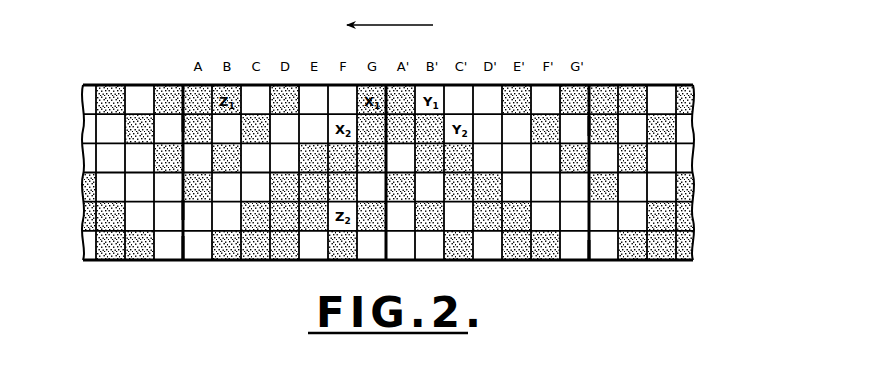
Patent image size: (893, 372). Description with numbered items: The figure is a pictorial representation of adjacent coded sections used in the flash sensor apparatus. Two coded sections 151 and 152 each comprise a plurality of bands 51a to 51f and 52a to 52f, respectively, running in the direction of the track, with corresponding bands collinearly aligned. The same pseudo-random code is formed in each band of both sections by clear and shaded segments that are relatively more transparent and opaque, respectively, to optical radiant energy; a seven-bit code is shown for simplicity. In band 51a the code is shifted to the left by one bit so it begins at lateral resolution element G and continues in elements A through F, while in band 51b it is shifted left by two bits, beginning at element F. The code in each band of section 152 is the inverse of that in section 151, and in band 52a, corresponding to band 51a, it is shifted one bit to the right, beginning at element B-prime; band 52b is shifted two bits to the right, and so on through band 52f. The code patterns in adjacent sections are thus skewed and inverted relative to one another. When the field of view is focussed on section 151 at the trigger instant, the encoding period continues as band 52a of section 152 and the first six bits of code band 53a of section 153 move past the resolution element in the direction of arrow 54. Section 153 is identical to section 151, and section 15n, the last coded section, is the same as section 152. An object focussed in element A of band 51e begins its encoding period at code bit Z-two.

The arrow 54 is at (390, 12).
The band 51a is at (159, 157).
The band 51b is at (136, 97).
The band 51e is at (152, 243).
The band 51f is at (167, 272).
The band 52a is at (608, 150).
The band 52b is at (629, 98).
The band 52f is at (611, 267).
The code band 53a is at (723, 163).
The coded section 15n is at (69, 281).
The coded section 151 is at (284, 285).
The coded section 152 is at (487, 286).
The coded section 153 is at (646, 286).